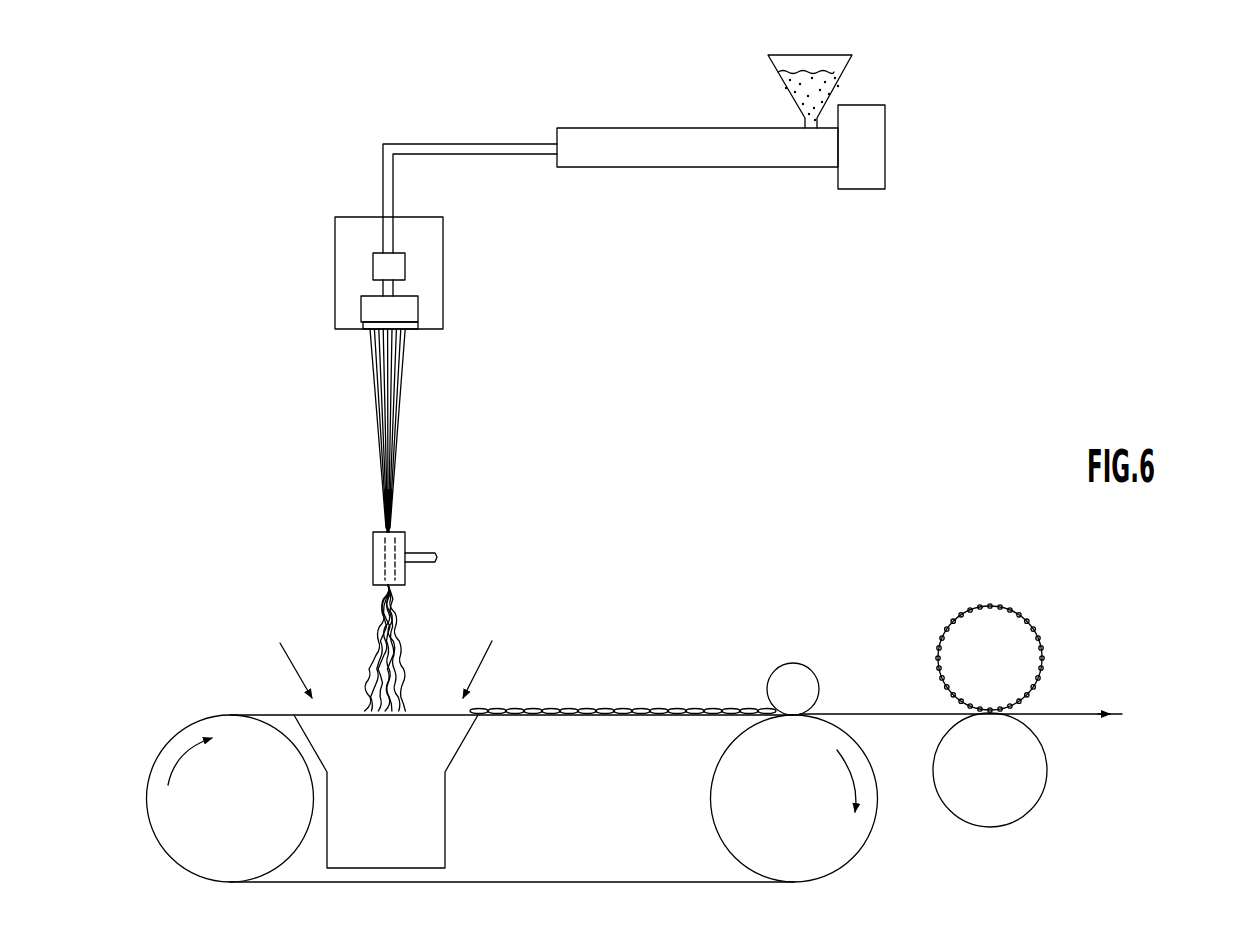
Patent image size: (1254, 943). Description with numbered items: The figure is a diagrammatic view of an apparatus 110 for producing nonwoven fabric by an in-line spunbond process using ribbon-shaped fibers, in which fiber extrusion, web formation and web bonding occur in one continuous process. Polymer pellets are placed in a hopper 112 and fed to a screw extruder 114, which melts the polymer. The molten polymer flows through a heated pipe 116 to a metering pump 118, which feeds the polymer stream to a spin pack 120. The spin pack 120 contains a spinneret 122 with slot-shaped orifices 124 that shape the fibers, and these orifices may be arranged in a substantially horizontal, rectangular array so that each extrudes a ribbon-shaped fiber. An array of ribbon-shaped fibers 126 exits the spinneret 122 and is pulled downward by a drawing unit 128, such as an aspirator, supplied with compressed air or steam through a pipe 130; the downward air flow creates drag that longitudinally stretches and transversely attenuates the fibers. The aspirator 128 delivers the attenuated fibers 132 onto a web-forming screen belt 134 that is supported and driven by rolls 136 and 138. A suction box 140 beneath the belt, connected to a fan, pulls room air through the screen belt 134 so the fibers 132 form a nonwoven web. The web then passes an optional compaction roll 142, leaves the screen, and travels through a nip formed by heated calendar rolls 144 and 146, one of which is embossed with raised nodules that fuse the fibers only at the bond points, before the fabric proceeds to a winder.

The apparatus 110 is at (814, 477).
The hopper 112 is at (842, 83).
The screw extruder 114 is at (722, 159).
The heated pipe 116 is at (467, 143).
The metering pump 118 is at (373, 267).
The spin pack 120 is at (410, 315).
The spinneret 122 is at (365, 335).
The slot-shaped orifices 124 is at (408, 330).
The ribbon-shaped fibers 126 is at (403, 368).
The drawing unit 128 is at (405, 537).
The pipe 130 is at (420, 565).
The attenuated fibers 132 is at (402, 650).
The web-forming screen belt 134 is at (530, 712).
The roll 136 is at (292, 853).
The roll 138 is at (748, 867).
The suction box 140 is at (430, 832).
The compaction roll 142 is at (800, 662).
The heated calendar roll 144 is at (990, 658).
The heated calendar roll 146 is at (990, 770).